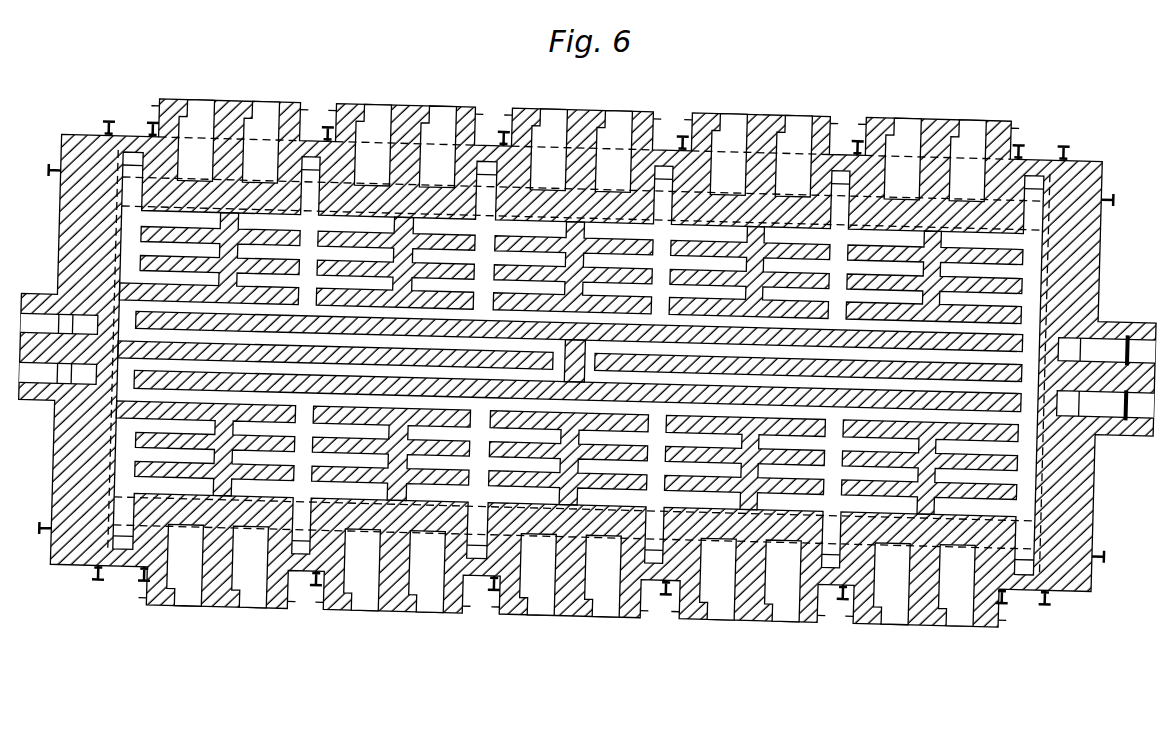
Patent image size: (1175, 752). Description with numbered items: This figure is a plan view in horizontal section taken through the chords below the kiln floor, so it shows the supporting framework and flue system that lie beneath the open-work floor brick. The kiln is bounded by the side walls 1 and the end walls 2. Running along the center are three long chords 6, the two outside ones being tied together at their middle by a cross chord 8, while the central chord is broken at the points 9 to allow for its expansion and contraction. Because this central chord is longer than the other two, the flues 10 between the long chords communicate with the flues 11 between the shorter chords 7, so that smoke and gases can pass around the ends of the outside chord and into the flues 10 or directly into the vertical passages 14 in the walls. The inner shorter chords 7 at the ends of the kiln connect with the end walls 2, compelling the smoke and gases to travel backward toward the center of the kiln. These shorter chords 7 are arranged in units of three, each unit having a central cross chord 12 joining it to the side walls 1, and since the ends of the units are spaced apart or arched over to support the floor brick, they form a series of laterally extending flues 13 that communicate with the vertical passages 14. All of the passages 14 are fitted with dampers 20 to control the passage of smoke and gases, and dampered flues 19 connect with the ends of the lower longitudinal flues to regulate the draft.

The side walls 1 is at (113, 133).
The end walls 2 is at (63, 481).
The long chords 6 is at (598, 363).
The shorter chords 7 is at (568, 364).
The cross chord 8 is at (585, 339).
The break points 9 is at (576, 364).
The flues 10 is at (570, 361).
The flues 11 is at (568, 363).
The central cross chord 12 is at (577, 362).
The laterally extending flues 13 is at (578, 365).
The vertical passages 14 is at (572, 362).
The dampered flues 19 is at (587, 364).
The dampers 20 is at (1137, 380).